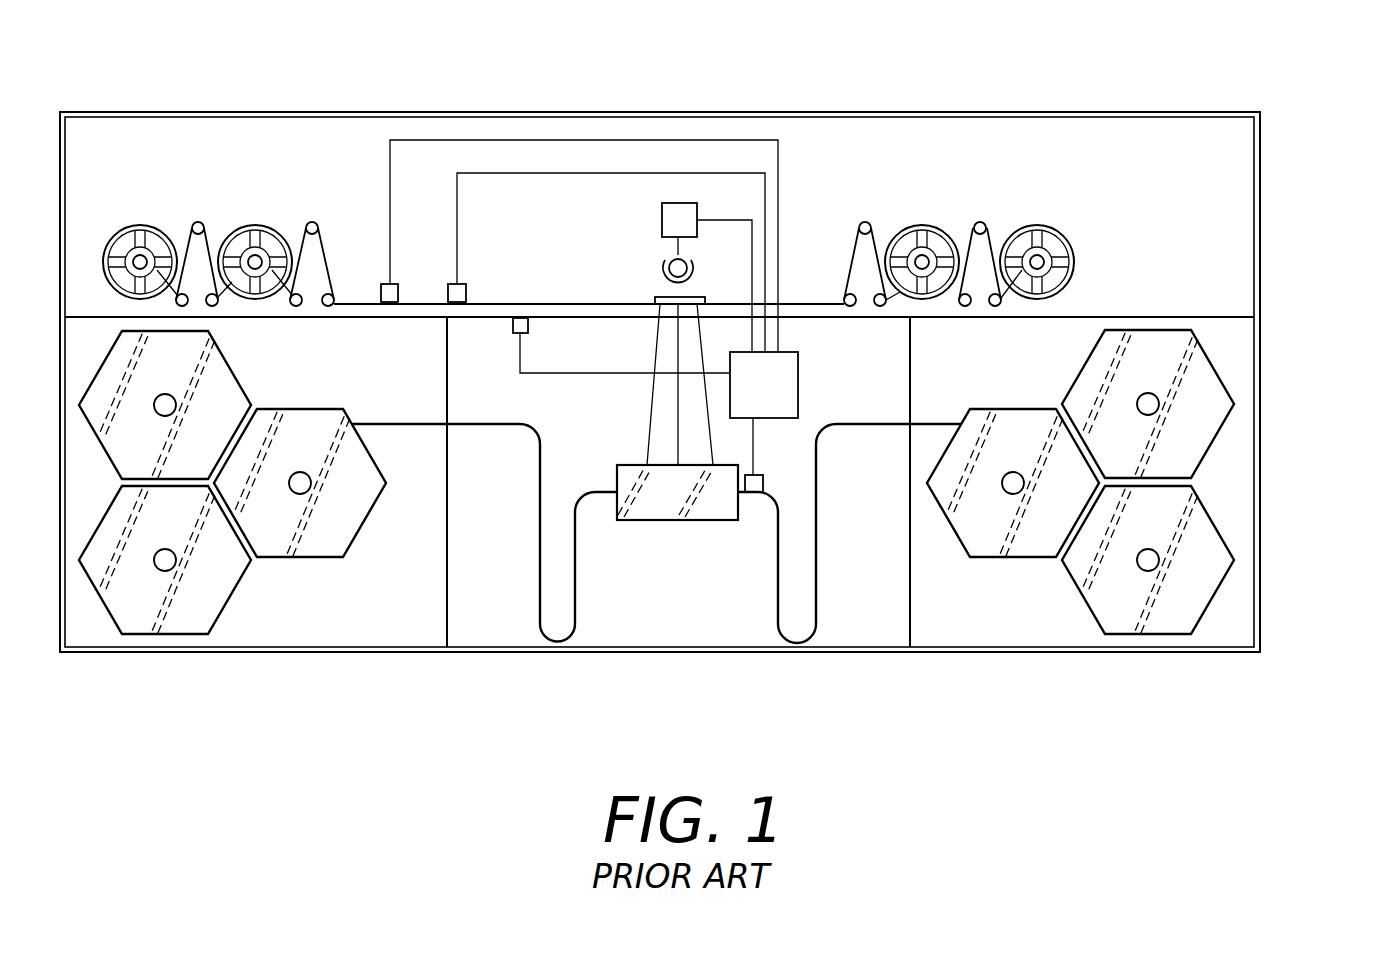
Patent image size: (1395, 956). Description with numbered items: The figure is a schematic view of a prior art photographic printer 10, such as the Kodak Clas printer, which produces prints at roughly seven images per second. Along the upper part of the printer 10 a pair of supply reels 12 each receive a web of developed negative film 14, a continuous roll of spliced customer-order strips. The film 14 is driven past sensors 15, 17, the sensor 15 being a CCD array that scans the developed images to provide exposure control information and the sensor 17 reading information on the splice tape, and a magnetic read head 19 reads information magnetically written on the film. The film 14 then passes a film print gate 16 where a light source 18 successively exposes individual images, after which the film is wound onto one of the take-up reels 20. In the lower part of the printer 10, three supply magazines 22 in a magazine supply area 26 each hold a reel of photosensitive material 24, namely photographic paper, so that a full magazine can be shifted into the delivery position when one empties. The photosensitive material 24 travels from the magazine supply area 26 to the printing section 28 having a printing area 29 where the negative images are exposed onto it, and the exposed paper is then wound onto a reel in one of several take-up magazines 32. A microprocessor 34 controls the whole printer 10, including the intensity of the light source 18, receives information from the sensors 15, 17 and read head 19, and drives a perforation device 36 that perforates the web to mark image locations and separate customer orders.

The printer 10 is at (1297, 138).
The supply reels 12 is at (140, 225).
The web of developed negative film 14 is at (210, 247).
The sensor 15 is at (385, 285).
The film print gate 16 is at (653, 296).
The sensor 17 is at (464, 284).
The light source 18 is at (668, 257).
The magnetic read head 19 is at (518, 334).
The take-up reels 20 is at (940, 227).
The supply magazines 22 is at (210, 378).
The web of photosensitive material 24 is at (370, 424).
The magazine supply area 26 is at (417, 583).
The printing section 28 is at (624, 413).
The printing area 29 is at (645, 465).
The take-up magazines 32 is at (1002, 423).
The microprocessor 34 is at (798, 372).
The perforation device 36 is at (765, 476).